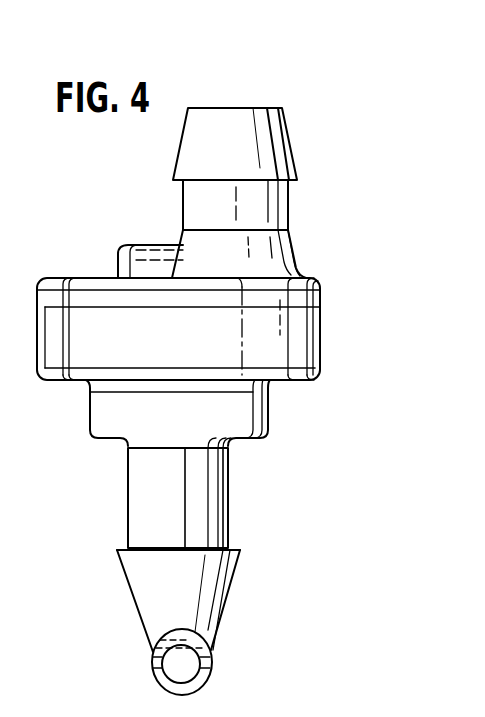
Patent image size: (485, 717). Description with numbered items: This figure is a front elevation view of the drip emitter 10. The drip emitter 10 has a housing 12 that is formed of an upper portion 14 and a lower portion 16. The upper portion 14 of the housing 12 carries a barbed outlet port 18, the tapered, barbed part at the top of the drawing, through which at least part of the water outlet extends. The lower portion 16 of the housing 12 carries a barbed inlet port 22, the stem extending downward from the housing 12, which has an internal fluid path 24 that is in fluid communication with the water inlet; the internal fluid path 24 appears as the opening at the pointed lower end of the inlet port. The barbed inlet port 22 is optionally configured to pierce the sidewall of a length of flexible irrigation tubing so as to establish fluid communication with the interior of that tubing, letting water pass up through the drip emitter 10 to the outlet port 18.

The drip emitter 10 is at (296, 85).
The housing 12 is at (328, 324).
The upper portion 14 is at (310, 272).
The lower portion 16 is at (313, 388).
The barbed outlet port 18 is at (290, 131).
The barbed inlet port 22 is at (230, 492).
The internal fluid path 24 is at (200, 672).